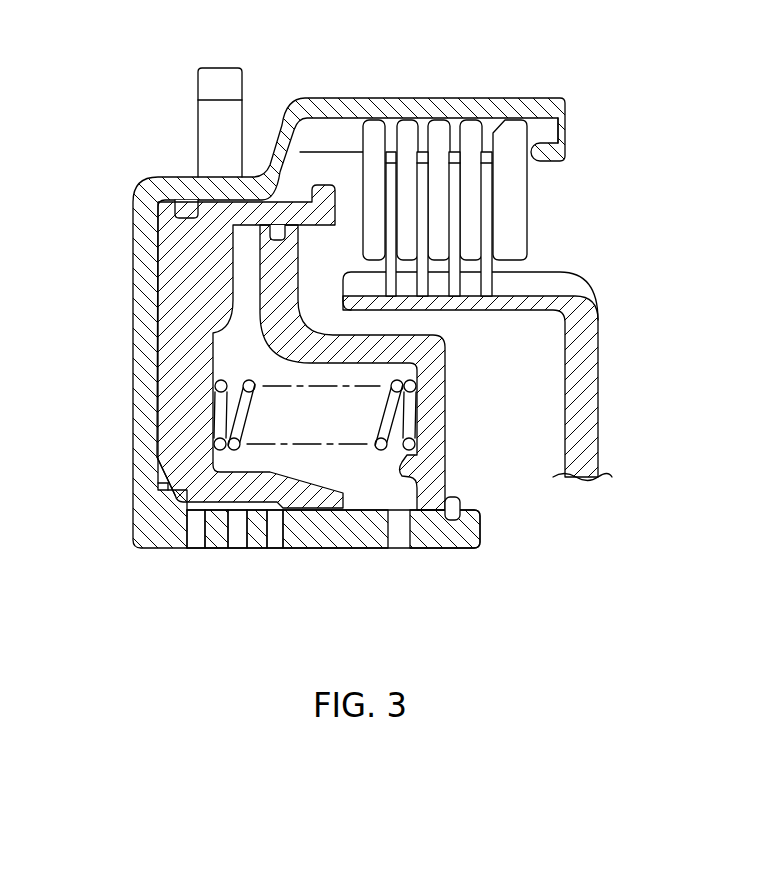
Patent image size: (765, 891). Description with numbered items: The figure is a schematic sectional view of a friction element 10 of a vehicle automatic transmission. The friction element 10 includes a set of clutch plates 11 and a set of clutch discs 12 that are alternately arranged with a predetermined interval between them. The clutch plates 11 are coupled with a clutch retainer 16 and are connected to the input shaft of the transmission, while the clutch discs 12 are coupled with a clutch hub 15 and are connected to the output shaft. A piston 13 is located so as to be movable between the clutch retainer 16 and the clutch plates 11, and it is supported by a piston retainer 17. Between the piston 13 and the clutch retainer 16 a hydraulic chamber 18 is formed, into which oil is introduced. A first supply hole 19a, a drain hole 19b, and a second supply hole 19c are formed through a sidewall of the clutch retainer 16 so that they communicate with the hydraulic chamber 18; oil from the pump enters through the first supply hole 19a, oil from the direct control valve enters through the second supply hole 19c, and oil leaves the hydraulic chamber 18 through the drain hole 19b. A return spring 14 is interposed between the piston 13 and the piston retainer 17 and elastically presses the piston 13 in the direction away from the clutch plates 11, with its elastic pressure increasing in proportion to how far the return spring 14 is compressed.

The friction element 10 is at (102, 148).
The clutch plates 11 is at (367, 142).
The clutch discs 12 is at (488, 237).
The piston 13 is at (175, 401).
The return spring 14 is at (403, 410).
The clutch hub 15 is at (590, 385).
The clutch retainer 16 is at (143, 318).
The piston retainer 17 is at (433, 368).
The hydraulic chamber 18 is at (168, 483).
The first supply hole 19a is at (192, 528).
The drain hole 19b is at (232, 528).
The second supply hole 19c is at (267, 528).